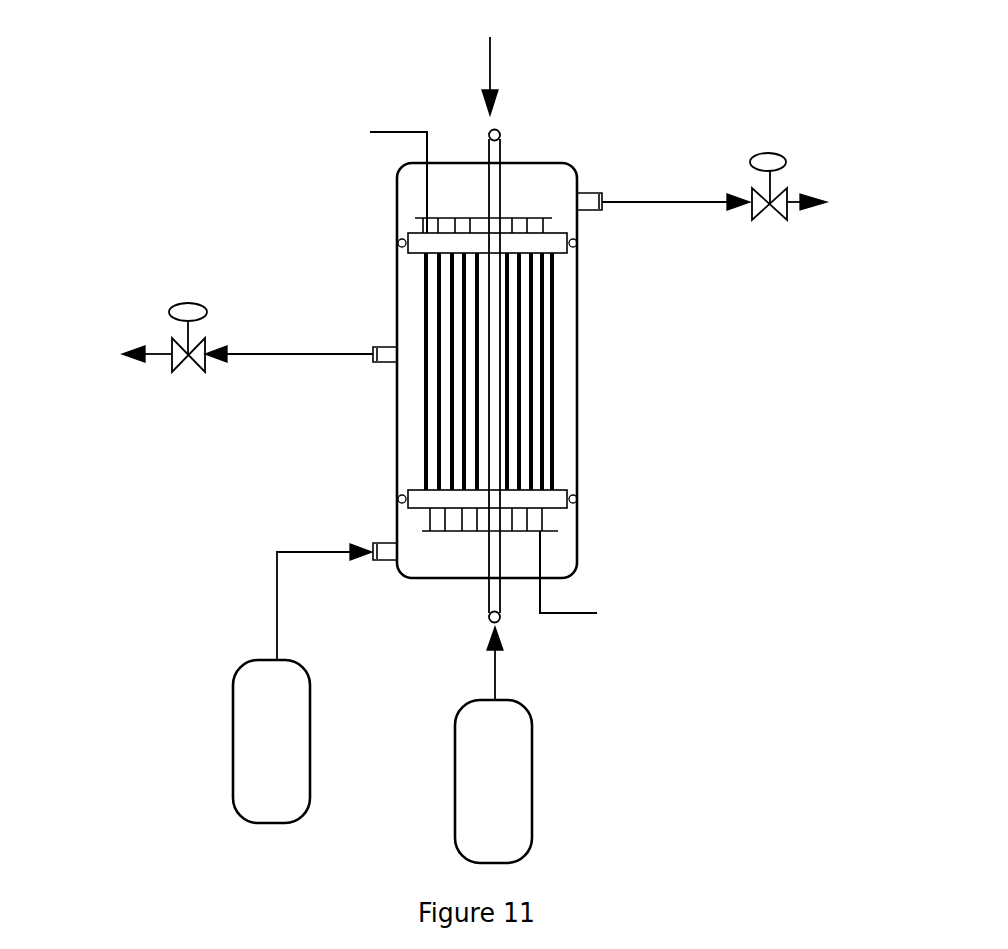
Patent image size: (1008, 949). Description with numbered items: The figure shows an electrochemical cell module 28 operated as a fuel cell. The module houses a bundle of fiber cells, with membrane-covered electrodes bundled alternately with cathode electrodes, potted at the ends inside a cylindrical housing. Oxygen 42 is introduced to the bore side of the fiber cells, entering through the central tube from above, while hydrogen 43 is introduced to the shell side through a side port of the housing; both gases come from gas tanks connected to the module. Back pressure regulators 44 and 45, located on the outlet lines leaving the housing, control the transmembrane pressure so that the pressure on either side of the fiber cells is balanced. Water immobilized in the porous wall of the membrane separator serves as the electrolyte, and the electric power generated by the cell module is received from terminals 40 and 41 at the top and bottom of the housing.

The electrochemical cell module 28 is at (695, 451).
The terminal 40 is at (383, 132).
The terminal 41 is at (578, 612).
The oxygen 42 is at (495, 72).
The hydrogen 43 is at (237, 690).
The back pressure regulator 44 is at (773, 162).
The back pressure regulator 45 is at (190, 312).